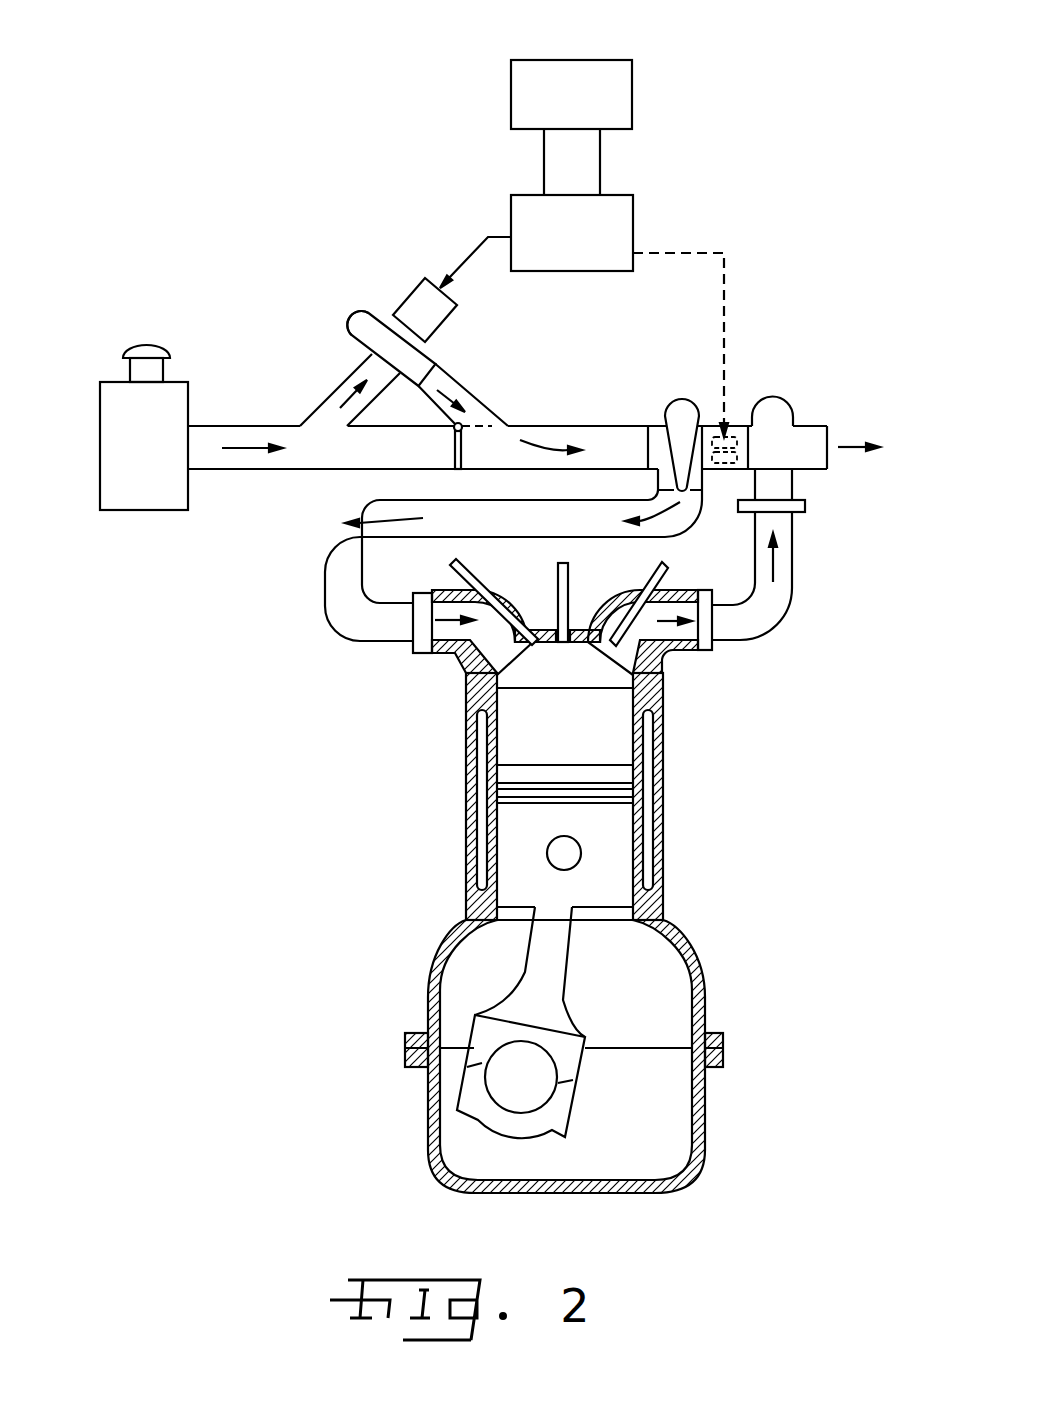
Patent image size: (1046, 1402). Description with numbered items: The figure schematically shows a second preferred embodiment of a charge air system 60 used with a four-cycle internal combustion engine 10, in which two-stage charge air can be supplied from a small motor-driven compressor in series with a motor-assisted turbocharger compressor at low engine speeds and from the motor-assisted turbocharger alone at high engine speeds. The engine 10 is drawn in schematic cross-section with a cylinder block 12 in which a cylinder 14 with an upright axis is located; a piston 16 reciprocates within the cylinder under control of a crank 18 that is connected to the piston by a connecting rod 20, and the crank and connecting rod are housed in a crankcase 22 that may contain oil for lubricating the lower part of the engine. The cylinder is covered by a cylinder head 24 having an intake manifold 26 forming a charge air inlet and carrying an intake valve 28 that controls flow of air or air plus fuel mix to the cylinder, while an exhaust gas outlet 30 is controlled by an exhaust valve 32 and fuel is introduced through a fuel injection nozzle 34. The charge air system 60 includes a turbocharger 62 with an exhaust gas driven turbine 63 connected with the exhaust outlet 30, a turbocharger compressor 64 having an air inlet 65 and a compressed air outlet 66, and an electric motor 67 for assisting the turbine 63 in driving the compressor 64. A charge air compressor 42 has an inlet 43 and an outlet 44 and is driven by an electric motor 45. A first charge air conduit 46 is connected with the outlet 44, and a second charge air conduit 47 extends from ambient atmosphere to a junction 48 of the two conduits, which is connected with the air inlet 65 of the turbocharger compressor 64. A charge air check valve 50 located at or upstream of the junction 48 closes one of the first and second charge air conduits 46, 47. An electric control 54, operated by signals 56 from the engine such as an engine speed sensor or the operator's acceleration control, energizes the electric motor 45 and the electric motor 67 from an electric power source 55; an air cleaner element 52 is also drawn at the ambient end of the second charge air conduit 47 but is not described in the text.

The internal combustion engine 10 is at (357, 1015).
The cylinder block 12 is at (663, 755).
The cylinder 14 is at (617, 708).
The piston 16 is at (612, 877).
The crank 18 is at (533, 1095).
The connecting rod 20 is at (550, 972).
The crankcase 22 is at (707, 992).
The cylinder head 24 is at (466, 666).
The intake manifold 26 is at (440, 632).
The intake valve 28 is at (464, 572).
The exhaust gas outlet 30 is at (700, 630).
The exhaust valve 32 is at (674, 574).
The fuel injection nozzle 34 is at (569, 590).
The charge air compressor 42 is at (352, 318).
The inlet 43 is at (368, 366).
The outlet 44 is at (436, 358).
The electric motor 45 is at (455, 312).
The first charge air conduit 46 is at (498, 413).
The second charge air conduit 47 is at (352, 471).
The junction 48 is at (500, 452).
The charge air check valve 50 is at (457, 472).
The air cleaner 52 is at (158, 345).
The electric control 54 is at (578, 272).
The electric power source 55 is at (578, 60).
The signals 56 is at (633, 228).
The charge air system 60 is at (385, 225).
The turbocharger 62 is at (750, 393).
The exhaust gas driven turbine 63 is at (792, 407).
The turbocharger compressor 64 is at (683, 397).
The air inlet 65 is at (656, 427).
The compressed air outlet 66 is at (707, 478).
The electric motor 67 is at (747, 400).